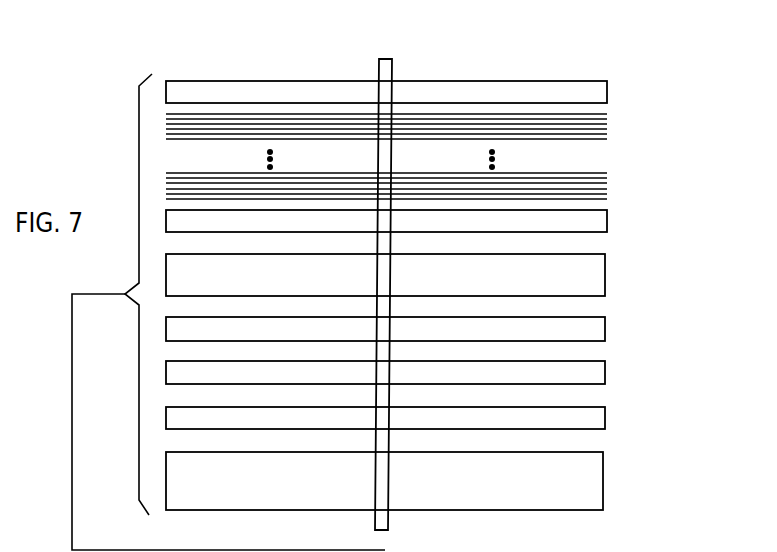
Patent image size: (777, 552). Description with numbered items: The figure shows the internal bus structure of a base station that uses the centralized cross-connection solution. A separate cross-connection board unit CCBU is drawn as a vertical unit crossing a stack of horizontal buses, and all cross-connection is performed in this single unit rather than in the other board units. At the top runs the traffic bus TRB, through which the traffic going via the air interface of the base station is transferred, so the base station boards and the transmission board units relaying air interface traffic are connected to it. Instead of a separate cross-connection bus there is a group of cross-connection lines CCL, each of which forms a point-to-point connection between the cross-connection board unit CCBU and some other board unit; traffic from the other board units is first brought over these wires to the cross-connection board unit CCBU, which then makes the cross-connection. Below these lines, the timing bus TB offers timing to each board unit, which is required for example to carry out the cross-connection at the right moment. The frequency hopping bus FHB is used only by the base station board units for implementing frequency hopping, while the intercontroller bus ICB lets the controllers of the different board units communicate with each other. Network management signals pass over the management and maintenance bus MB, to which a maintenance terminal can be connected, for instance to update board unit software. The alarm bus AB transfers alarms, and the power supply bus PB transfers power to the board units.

The cross-connection board unit CCBU is at (385, 59).
The traffic bus TRB is at (607, 95).
The cross-connection lines CCL is at (607, 173).
The timing bus TB is at (607, 226).
The frequency hopping bus FHB is at (605, 283).
The intercontroller bus ICB is at (605, 340).
The management and maintenance bus MB is at (605, 380).
The alarm bus AB is at (605, 426).
The power supply bus PB is at (603, 480).